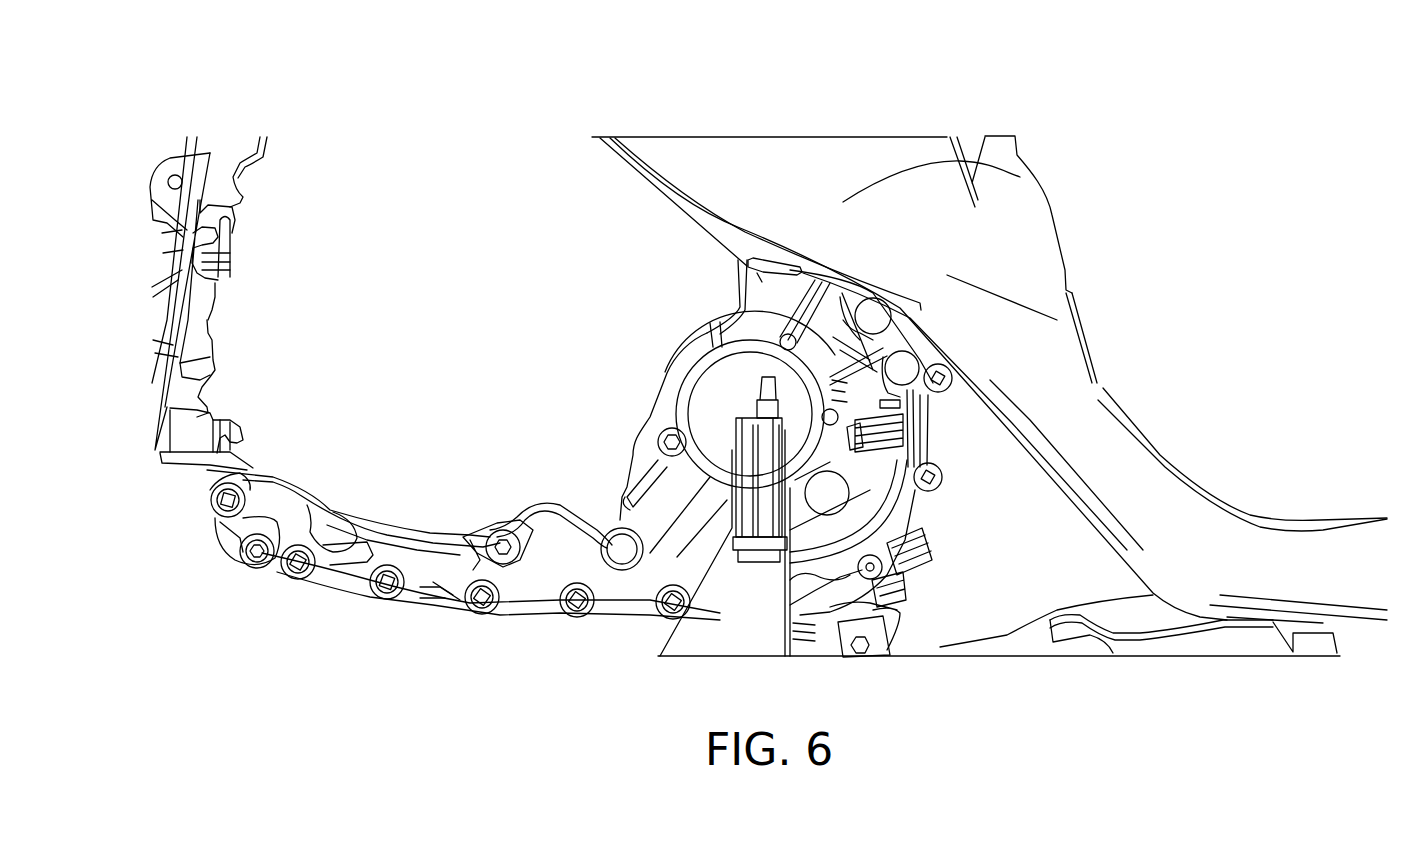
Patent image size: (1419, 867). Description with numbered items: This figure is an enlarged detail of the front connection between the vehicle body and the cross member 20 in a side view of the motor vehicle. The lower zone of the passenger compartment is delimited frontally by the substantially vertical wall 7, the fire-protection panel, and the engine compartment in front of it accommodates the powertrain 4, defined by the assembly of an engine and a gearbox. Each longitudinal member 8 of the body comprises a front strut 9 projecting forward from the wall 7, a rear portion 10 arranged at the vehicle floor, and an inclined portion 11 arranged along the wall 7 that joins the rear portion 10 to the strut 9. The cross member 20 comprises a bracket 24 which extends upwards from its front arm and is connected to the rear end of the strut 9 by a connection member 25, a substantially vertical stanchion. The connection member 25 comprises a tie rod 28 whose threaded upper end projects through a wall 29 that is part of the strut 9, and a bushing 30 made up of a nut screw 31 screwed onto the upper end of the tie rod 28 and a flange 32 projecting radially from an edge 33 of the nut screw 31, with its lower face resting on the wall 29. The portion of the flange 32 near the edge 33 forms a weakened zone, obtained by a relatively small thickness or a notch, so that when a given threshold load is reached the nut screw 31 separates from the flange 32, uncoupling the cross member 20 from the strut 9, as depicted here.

The powertrain 4 is at (923, 507).
The wall 7 is at (1103, 388).
The longitudinal member 8 is at (1107, 547).
The front strut 9 is at (1020, 177).
The rear portion 10 is at (1313, 560).
The inclined portion 11 is at (1003, 423).
The cross member 20 is at (1116, 645).
The bracket 24 is at (745, 628).
The connection member 25 is at (907, 570).
The tie rod 28 is at (760, 480).
The wall 29 is at (740, 260).
The bushing 30 is at (786, 404).
The nut screw 31 is at (757, 405).
The flange 32 is at (752, 260).
The edge 33 is at (780, 420).